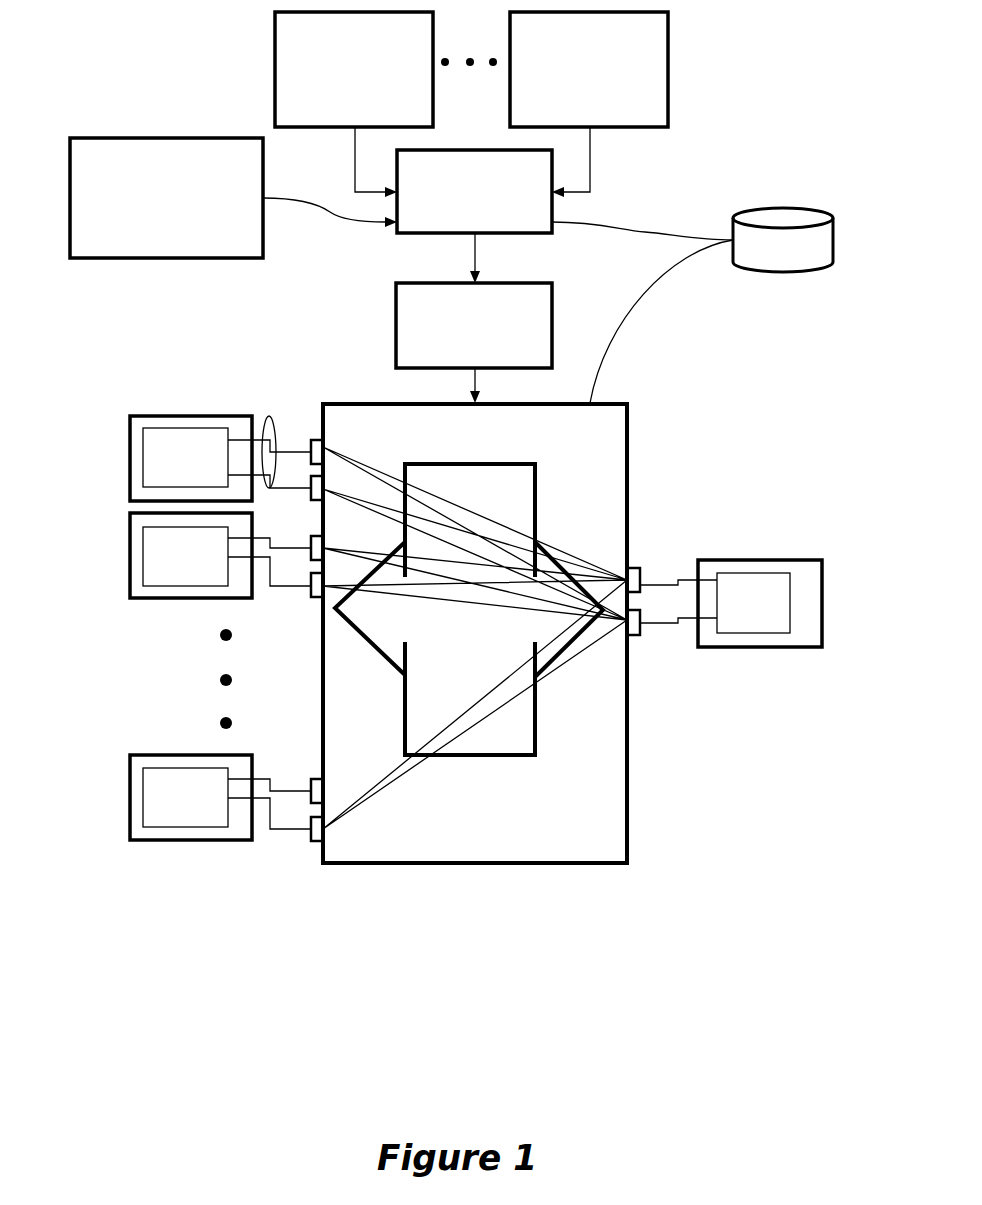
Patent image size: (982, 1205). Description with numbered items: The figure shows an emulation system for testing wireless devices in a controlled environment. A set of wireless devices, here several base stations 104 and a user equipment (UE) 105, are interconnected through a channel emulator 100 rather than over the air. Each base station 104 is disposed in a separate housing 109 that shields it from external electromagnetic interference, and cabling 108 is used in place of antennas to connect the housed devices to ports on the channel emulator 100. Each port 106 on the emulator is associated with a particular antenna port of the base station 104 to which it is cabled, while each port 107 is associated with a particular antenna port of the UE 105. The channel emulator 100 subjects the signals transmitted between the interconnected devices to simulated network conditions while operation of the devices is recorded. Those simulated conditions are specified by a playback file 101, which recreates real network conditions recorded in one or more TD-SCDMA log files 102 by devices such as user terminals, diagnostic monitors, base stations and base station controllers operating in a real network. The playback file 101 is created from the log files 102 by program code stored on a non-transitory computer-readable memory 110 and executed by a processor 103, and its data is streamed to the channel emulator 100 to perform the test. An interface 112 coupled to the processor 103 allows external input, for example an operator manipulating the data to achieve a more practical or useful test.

The channel emulator 100 is at (578, 847).
The playback file 101 is at (495, 352).
The log file 102 is at (601, 109).
The processor 103 is at (487, 214).
The base station 104 is at (205, 476).
The user equipment (UE) 105 is at (758, 573).
The port 106 is at (311, 598).
The port 107 is at (641, 565).
The cabling 108 is at (270, 414).
The housing 109 is at (148, 416).
The non-transitory computer-readable memory 110 is at (805, 261).
The interface 112 is at (178, 224).